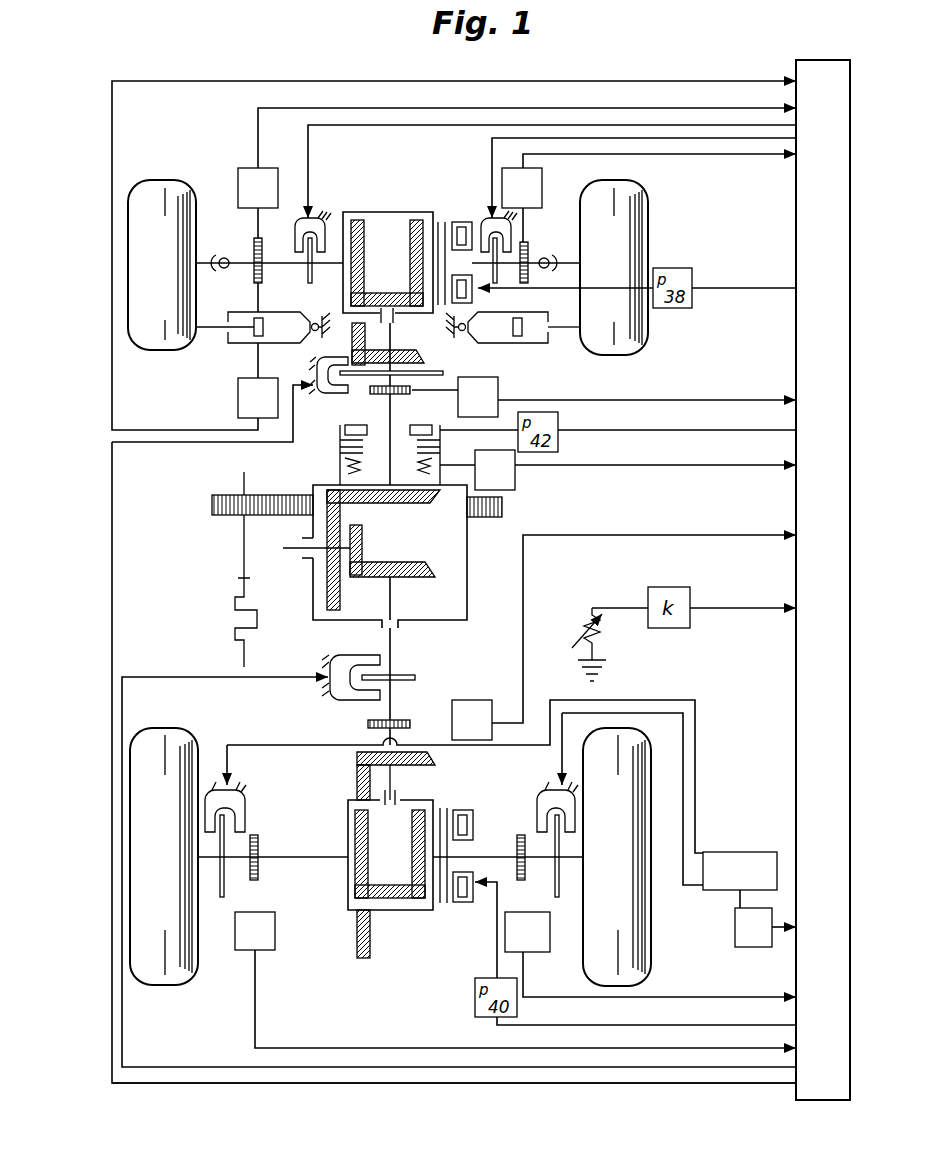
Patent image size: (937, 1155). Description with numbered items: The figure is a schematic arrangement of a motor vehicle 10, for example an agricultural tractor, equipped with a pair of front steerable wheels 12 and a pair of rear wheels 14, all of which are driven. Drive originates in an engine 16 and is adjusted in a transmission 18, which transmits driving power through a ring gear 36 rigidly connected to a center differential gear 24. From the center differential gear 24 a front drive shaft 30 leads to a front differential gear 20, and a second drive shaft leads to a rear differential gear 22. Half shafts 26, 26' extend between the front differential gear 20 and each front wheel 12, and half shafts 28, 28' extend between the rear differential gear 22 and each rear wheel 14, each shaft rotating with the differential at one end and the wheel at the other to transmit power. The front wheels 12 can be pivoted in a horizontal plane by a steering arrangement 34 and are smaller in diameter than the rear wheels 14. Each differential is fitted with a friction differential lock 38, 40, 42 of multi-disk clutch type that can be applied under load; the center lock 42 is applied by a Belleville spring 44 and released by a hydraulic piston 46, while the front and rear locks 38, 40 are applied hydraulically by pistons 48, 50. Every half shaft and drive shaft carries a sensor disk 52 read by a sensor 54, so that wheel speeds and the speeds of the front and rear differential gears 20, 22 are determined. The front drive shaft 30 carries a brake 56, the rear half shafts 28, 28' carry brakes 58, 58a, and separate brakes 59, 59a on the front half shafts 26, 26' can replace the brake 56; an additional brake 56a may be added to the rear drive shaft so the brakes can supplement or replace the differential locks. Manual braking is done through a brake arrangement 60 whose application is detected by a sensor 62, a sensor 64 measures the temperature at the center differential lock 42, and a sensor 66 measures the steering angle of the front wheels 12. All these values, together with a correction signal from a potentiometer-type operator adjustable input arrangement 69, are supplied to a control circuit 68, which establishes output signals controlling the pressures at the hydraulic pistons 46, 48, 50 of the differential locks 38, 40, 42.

The motor vehicle 10 is at (215, 1090).
The front steerable wheels 12 is at (168, 180).
The rear wheels 14 is at (172, 728).
The engine 16 is at (235, 634).
The transmission 18 is at (212, 505).
The front differential gear 20 is at (405, 212).
The rear differential gear 22 is at (388, 915).
The center differential gear 24 is at (467, 595).
The front half shaft 26 is at (269, 279).
The front half shaft 26' is at (526, 282).
The rear half shaft 28 is at (273, 876).
The rear half shaft 28' is at (508, 832).
The front drive shaft 30 is at (385, 420).
The steering arrangement 34 is at (228, 340).
The ring gear 36 is at (502, 507).
The differential lock 38 is at (445, 226).
The differential lock 40 is at (456, 852).
The differential lock 42 is at (335, 448).
The Belleville spring 44 is at (342, 470).
The hydraulic piston 46 is at (345, 427).
The hydraulic piston 48 is at (462, 222).
The hydraulic piston 50 is at (460, 903).
The sensor disk 52 is at (254, 243).
The sensor 54 is at (250, 168).
The brake 56 is at (318, 366).
The brake 56a is at (338, 655).
The brake 58 is at (240, 798).
The brake 58a is at (540, 800).
The brake 59 is at (340, 197).
The brake 59a is at (488, 218).
The brake arrangement 60 is at (750, 852).
The sensor 62 is at (760, 947).
The sensor 64 is at (517, 472).
The sensor 66 is at (238, 398).
The control circuit 68 is at (836, 527).
The operator adjustable input arrangement 69 is at (588, 624).